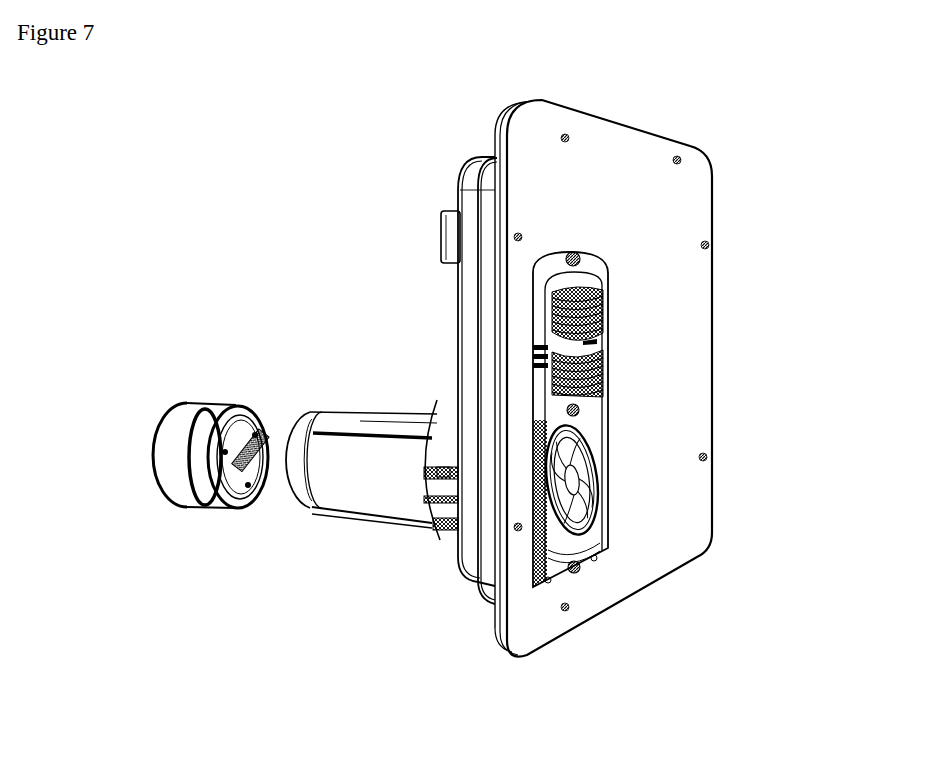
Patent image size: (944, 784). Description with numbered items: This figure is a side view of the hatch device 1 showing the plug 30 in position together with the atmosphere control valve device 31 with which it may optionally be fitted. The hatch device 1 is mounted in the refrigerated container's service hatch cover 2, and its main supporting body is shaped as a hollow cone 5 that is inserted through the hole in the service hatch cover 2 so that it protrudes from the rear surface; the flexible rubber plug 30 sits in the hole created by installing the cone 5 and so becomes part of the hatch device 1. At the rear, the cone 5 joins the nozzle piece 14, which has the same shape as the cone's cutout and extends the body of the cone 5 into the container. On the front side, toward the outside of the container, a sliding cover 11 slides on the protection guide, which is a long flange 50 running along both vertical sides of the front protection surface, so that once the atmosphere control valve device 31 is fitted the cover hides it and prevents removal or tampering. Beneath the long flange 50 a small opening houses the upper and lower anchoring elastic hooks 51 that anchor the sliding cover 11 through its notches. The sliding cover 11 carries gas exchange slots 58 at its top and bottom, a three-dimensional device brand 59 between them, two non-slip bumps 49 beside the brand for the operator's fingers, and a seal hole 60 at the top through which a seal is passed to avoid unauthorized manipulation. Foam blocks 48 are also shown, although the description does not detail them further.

The hatch device 1 is at (553, 557).
The service hatch cover 2 is at (677, 312).
The hollow cone 5 is at (444, 526).
The sliding cover 11 is at (608, 283).
The nozzle piece 14 is at (437, 418).
The plug 30 is at (135, 425).
The atmosphere control valve device 31 is at (348, 486).
The foam blocks 48 is at (452, 243).
The non-slip bumps 49 is at (533, 353).
The long flange or protection guide 50 is at (605, 488).
The upper and lower anchoring elastic hooks 51 is at (594, 561).
The gas exchange slots 58 is at (610, 389).
The device brand 59 is at (608, 341).
The seal hole 60 is at (579, 257).